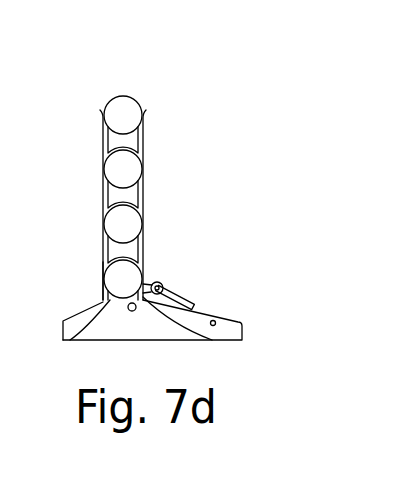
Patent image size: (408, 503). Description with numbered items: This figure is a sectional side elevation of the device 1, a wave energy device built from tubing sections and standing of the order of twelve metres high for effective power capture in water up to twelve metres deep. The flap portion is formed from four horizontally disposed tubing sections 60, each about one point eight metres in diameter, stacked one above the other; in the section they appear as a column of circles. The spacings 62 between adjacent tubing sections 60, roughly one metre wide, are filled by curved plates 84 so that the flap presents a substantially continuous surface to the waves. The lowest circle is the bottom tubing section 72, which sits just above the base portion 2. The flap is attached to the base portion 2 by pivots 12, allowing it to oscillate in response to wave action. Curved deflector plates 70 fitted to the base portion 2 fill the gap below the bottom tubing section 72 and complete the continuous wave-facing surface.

The device 1 is at (236, 151).
The base portion 2 is at (233, 327).
The pivots 12 is at (134, 311).
The tubing sections 60 is at (122, 104).
The spacings 62 is at (138, 143).
The curved deflector plates 70 is at (97, 325).
The bottom tubing section 72 is at (103, 275).
The curved plates 84 is at (108, 143).